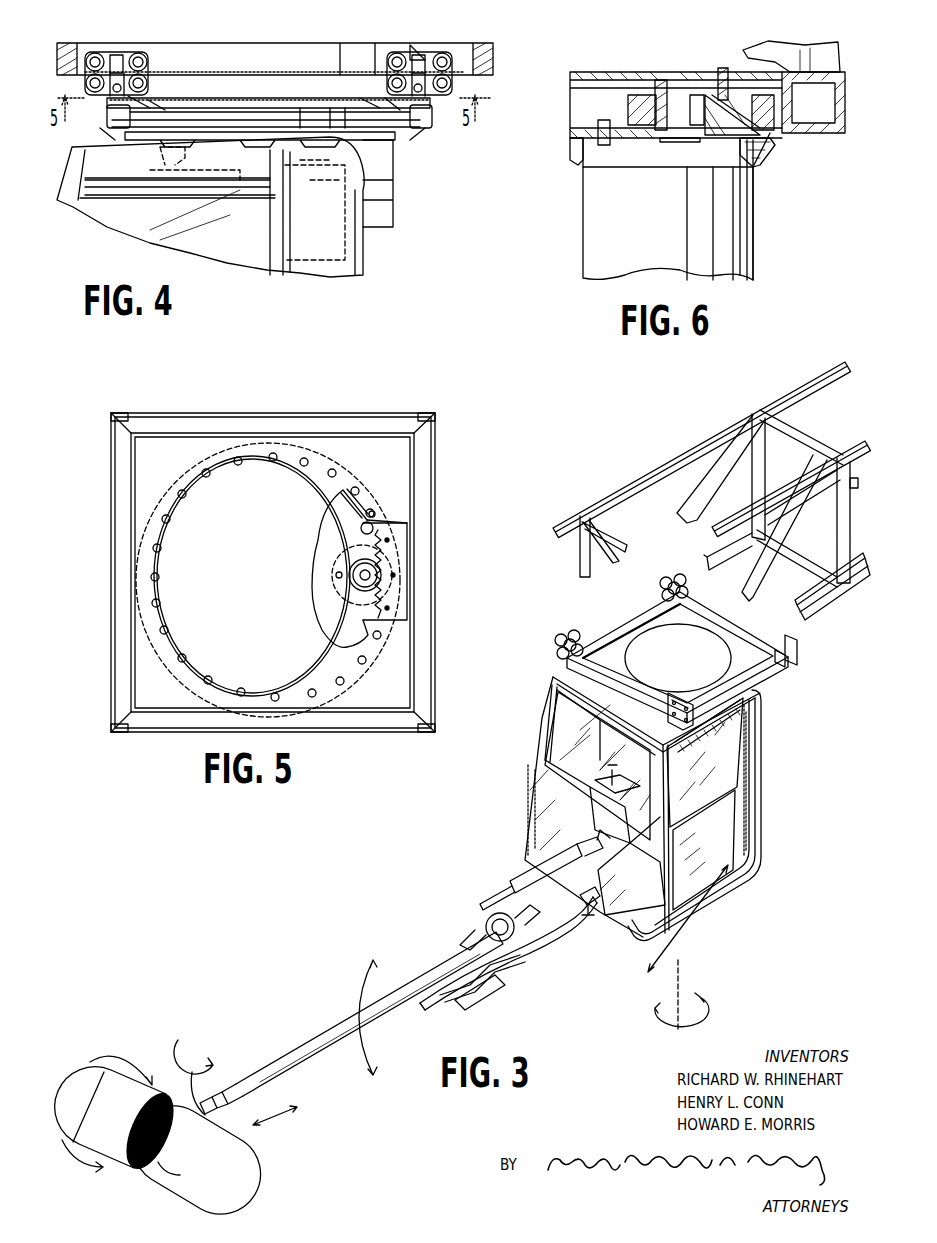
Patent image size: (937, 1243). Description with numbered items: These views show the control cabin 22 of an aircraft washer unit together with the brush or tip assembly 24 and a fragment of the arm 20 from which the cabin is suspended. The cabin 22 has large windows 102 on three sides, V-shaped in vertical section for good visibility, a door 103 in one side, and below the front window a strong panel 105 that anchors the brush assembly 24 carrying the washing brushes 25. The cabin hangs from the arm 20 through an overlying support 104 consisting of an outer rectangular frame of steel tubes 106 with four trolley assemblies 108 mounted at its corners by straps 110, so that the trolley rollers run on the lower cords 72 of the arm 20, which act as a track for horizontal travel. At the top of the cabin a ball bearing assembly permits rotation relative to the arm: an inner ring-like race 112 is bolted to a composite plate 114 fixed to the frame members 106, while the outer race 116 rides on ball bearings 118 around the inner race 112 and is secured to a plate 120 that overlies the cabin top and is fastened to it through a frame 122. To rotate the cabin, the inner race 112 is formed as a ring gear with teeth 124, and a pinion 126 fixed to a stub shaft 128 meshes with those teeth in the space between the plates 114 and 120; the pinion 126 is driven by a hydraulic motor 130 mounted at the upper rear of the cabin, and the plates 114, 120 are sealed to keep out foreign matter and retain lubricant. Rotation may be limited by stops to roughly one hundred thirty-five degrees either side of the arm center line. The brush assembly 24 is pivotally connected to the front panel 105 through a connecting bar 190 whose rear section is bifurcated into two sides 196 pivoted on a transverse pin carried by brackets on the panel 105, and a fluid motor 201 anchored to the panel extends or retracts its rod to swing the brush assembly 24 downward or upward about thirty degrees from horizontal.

In FIG. 3, the arm 20 is at (694, 434).
In FIG. 3, the control cabin 22 is at (662, 853).
In FIG. 3, the brush or tip assembly 24 is at (300, 1036).
In FIG. 3, the washing brushes 25 is at (85, 1068).
In FIG. 4, the lower cords 72 is at (308, 46).
In FIG. 3, the lower cords 72 is at (690, 565).
In FIG. 3, the windows 102 is at (535, 735).
In FIG. 3, the door 103 is at (725, 893).
In FIG. 5, the overlying support 104 is at (300, 559).
In FIG. 3, the overlying support 104 is at (636, 619).
In FIG. 3, the panel 105 is at (626, 893).
In FIG. 4, the steel tubes 106 is at (118, 125).
In FIG. 6, the steel tubes 106 is at (842, 134).
In FIG. 5, the steel tubes 106 is at (385, 413).
In FIG. 4, the trolley assemblies 108 is at (140, 55).
In FIG. 3, the trolley assemblies 108 is at (560, 638).
In FIG. 4, the straps 110 is at (140, 98).
In FIG. 6, the straps 110 is at (830, 42).
In FIG. 5, the straps 110 is at (118, 413).
In FIG. 6, the inner race 112 is at (746, 112).
In FIG. 6, the composite plate 114 is at (718, 46).
In FIG. 5, the composite plate 114 is at (345, 505).
In FIG. 6, the outer race 116 is at (752, 165).
In FIG. 6, the ball bearings 118 is at (705, 138).
In FIG. 4, the plate 120 is at (210, 150).
In FIG. 6, the plate 120 is at (572, 142).
In FIG. 5, the plate 120 is at (335, 537).
In FIG. 4, the frame 122 is at (158, 150).
In FIG. 6, the teeth 124 is at (675, 142).
In FIG. 5, the teeth 124 is at (374, 518).
In FIG. 6, the pinion 126 is at (627, 105).
In FIG. 5, the pinion 126 is at (362, 590).
In FIG. 6, the stub shaft 128 is at (665, 80).
In FIG. 4, the hydraulic motor 130 is at (395, 207).
In FIG. 6, the hydraulic motor 130 is at (659, 235).
In FIG. 3, the connecting bar 190 is at (468, 985).
In FIG. 3, the sides 196 is at (588, 920).
In FIG. 3, the fluid motor 201 is at (520, 873).